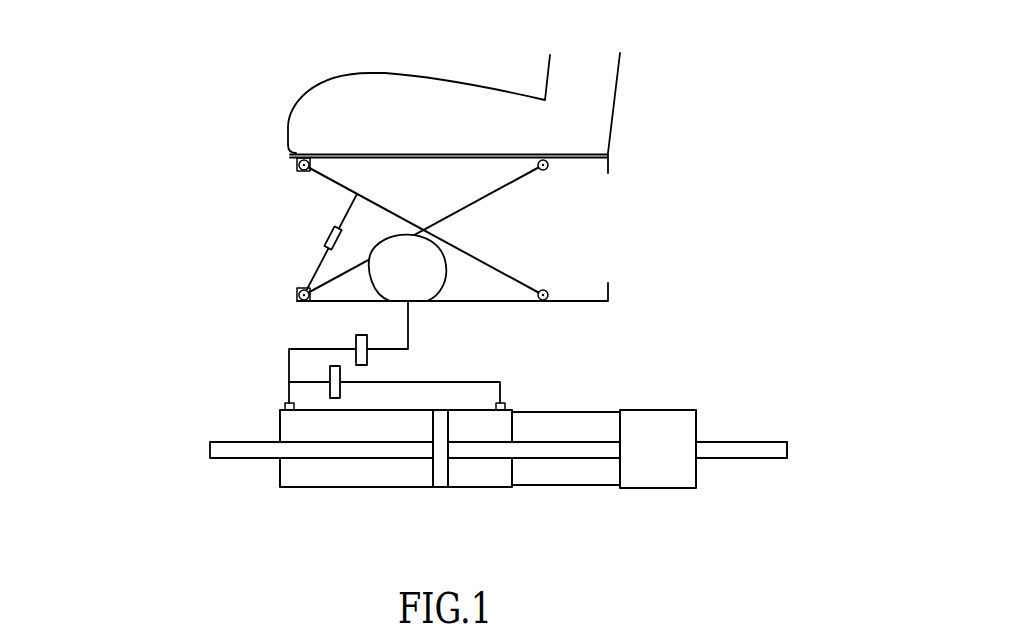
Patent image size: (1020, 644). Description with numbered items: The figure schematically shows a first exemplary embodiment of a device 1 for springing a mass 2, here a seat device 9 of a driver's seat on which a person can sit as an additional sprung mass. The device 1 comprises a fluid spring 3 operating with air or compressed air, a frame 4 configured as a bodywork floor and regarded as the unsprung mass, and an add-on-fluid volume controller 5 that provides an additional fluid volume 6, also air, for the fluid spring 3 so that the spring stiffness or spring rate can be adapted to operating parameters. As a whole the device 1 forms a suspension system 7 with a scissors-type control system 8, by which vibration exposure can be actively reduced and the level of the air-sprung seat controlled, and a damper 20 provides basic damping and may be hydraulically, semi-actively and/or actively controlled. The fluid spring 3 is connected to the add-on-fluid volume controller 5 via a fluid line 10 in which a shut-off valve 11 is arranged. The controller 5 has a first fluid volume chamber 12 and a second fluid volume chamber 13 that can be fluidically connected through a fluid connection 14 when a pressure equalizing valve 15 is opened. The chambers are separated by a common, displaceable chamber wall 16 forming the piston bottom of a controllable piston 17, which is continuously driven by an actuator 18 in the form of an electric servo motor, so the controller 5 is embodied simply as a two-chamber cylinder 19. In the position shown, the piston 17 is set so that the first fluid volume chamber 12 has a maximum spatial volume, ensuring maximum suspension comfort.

The device 1 is at (691, 76).
The mass 2 is at (398, 116).
The fluid spring 3 is at (427, 267).
The frame 4 is at (577, 302).
The add-on-fluid volume controller 5 is at (462, 494).
The additional fluid volume 6 is at (428, 494).
The suspension system 7 is at (295, 229).
The scissors-type control system 8 is at (453, 200).
The seat device 9 is at (590, 101).
The fluid line 10 is at (411, 355).
The shut-off valve 11 is at (352, 342).
The first fluid volume chamber 12 is at (310, 471).
The second fluid volume chamber 13 is at (483, 470).
The fluid connection 14 is at (477, 381).
The pressure equalizing valve 15 is at (340, 377).
The displaceable chamber wall 16 is at (442, 470).
The controllable piston 17 is at (740, 450).
The actuator 18 is at (672, 500).
The two-chamber cylinder 19 is at (813, 467).
The damper 20 is at (330, 233).